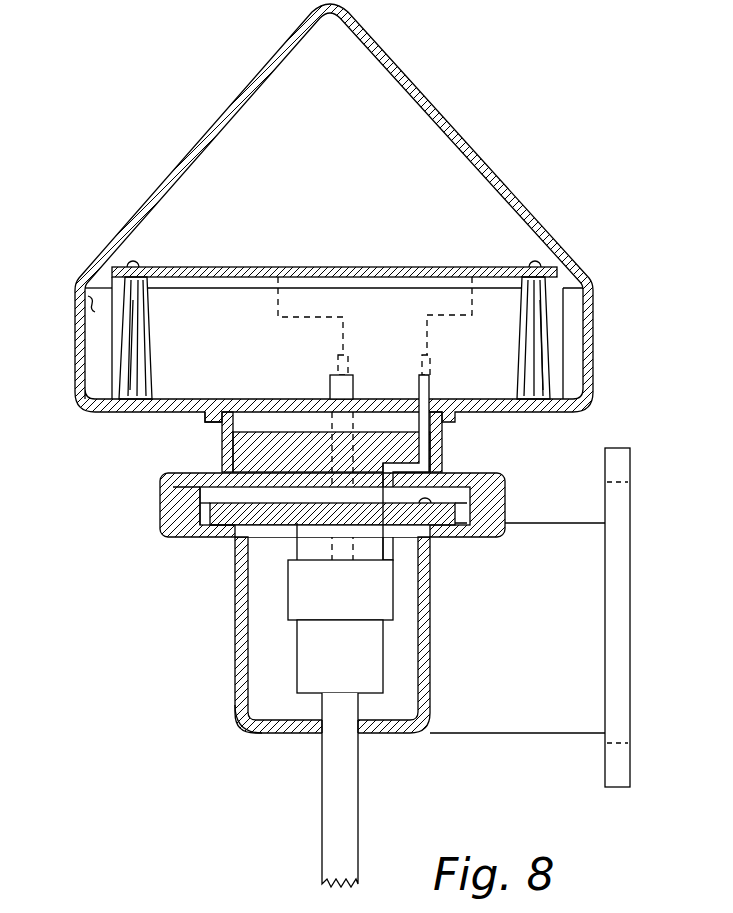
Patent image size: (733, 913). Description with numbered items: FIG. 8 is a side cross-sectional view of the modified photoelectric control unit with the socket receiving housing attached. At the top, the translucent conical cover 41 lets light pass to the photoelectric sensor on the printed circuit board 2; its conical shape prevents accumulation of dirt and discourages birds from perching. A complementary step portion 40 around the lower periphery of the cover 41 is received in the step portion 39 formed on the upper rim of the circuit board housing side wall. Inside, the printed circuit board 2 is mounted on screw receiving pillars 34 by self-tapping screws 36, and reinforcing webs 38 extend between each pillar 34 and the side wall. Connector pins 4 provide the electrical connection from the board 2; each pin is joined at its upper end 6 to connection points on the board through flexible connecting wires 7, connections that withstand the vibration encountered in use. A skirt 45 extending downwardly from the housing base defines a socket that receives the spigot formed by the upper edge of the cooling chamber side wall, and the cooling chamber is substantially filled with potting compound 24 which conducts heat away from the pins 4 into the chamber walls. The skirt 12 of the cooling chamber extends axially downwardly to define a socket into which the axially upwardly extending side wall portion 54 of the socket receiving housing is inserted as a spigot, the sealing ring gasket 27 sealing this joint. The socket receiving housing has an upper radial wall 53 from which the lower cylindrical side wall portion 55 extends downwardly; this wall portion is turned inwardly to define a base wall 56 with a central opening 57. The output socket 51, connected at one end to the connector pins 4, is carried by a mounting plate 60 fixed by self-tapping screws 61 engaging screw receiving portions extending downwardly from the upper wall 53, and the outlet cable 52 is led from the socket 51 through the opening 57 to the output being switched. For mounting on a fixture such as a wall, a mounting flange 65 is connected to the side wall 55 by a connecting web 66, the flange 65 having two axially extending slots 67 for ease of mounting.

The printed circuit board 2 is at (403, 270).
The connector pins 4 is at (385, 542).
The upper end of connector pin 6 is at (415, 372).
The flexible connecting wires 7 is at (293, 320).
The skirt 12 is at (160, 493).
The potting compound 24 is at (260, 440).
The sealing ring gasket 27 is at (207, 488).
The screw receiving pillars 34 is at (133, 387).
The self-tapping screw 36 is at (140, 258).
The reinforcing webs 38 is at (118, 340).
The step portion 39 is at (83, 315).
The complementary step portion 40 is at (78, 293).
The translucent conical cover 41 is at (453, 125).
The skirt 45 is at (213, 418).
The output socket 51 is at (315, 663).
The outlet cable 52 is at (333, 818).
The upper radial wall 53 is at (217, 525).
The axially upwardly extending side wall portion 54 is at (187, 510).
The lower cylindrical side wall portion 55 is at (240, 648).
The base wall 56 is at (250, 728).
The central opening 57 is at (318, 737).
The mounting plate 60 is at (445, 528).
The self-tapping screws 61 is at (423, 500).
The mounting flange 65 is at (627, 610).
The connecting web 66 is at (518, 715).
The axially extending slots 67 is at (627, 473).